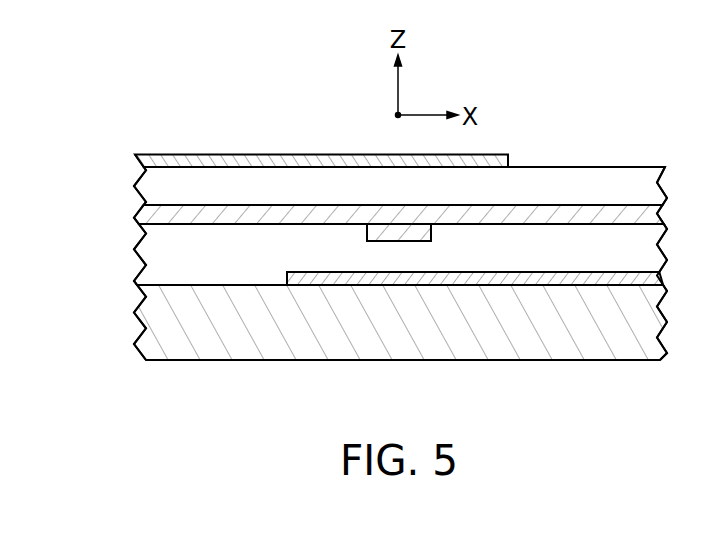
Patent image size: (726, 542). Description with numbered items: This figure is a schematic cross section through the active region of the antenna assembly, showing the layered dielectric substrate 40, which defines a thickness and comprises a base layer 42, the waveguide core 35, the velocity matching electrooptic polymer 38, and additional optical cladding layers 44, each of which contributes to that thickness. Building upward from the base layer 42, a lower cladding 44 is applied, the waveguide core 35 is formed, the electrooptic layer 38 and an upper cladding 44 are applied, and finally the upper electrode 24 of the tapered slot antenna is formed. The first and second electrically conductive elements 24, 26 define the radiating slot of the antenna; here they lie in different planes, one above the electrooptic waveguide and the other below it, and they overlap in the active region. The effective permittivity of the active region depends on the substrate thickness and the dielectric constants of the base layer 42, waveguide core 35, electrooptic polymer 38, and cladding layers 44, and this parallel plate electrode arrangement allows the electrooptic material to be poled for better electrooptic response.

The first electrically conductive element 24 is at (254, 163).
The second electrically conductive element 26 is at (556, 274).
The waveguide core 35 is at (373, 233).
The velocity matching electrooptic polymer 38 is at (530, 210).
The dielectric substrate 40 is at (112, 360).
The base layer 42 is at (222, 353).
The additional optical cladding layer 44 is at (646, 181).